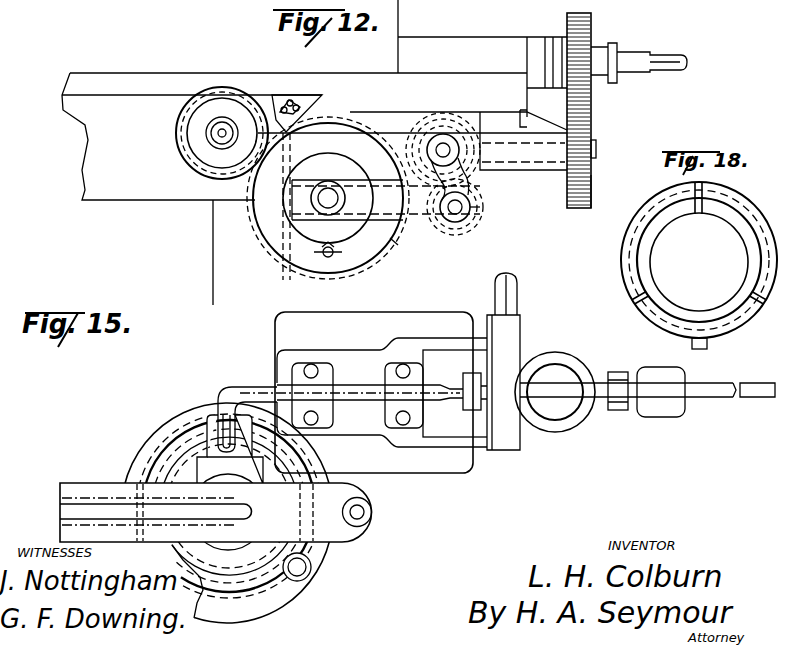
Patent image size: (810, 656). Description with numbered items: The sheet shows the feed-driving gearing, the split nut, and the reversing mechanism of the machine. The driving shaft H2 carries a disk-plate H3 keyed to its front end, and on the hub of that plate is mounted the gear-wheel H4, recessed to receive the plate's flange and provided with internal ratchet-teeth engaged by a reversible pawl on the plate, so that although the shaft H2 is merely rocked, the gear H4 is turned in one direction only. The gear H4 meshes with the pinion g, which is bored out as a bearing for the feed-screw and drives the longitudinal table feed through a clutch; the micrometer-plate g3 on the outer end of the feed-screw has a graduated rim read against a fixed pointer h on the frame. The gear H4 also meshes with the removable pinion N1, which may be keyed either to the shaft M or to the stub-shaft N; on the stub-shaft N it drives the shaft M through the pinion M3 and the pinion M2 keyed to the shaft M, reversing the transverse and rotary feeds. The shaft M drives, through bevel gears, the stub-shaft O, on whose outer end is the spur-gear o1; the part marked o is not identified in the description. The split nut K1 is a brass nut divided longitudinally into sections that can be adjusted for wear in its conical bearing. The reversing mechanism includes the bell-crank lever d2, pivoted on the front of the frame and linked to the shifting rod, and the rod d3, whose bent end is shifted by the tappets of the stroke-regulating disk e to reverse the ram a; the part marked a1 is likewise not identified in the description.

In FIG. 12, the pinion g is at (185, 140).
In FIG. 12, the micrometer-plate g3 is at (206, 166).
In FIG. 12, the fixed pointer h is at (290, 100).
In FIG. 12, the shaft H2 is at (332, 194).
In FIG. 12, the disk-plate H3 is at (368, 258).
In FIG. 12, the gear-wheel H4 is at (403, 243).
In FIG. 12, the shaft M is at (432, 137).
In FIG. 12, the pinion N1 is at (452, 135).
In FIG. 12, the pinion M2 is at (465, 178).
In FIG. 12, the stub-shaft N is at (465, 210).
In FIG. 12, the pinion M3 is at (470, 232).
In FIG. 12, the stub-shaft O is at (580, 9).
In FIG. 12, the stop o is at (597, 148).
In FIG. 12, the spur-gear o1 is at (595, 184).
In FIG. 18, the split nut K1 is at (653, 263).
In FIG. 15, the dial bracket a1 is at (220, 418).
In FIG. 15, the rod d3 is at (357, 388).
In FIG. 15, the bell-crank lever d2 is at (590, 400).
In FIG. 15, the ram a is at (216, 512).
In FIG. 15, the stroke-regulating disk e is at (314, 568).